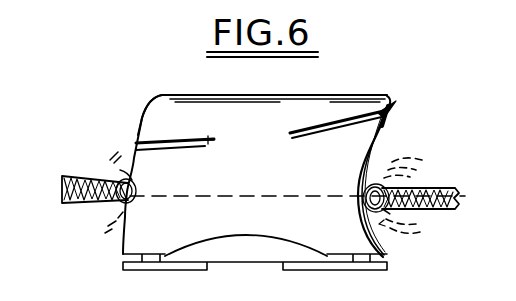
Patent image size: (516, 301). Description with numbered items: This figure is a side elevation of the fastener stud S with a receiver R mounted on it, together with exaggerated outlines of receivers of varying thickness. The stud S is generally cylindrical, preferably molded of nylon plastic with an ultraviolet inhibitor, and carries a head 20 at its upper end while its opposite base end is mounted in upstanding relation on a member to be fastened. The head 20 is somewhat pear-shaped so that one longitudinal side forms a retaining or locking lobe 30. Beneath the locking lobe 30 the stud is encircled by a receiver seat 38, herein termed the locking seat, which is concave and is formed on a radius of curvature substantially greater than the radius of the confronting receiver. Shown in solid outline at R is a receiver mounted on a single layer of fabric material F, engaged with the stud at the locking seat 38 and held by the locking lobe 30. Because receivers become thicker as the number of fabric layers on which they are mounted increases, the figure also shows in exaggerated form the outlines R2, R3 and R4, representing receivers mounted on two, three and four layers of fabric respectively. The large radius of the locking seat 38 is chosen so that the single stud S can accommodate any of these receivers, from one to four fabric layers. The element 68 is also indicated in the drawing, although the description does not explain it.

The head 20 is at (303, 109).
The rounded shoulder 68 is at (147, 108).
The retaining or locking lobe 30 is at (395, 102).
The receiver seat (locking seat) 38 is at (385, 143).
The stud S is at (254, 149).
The receiver R is at (128, 168).
The fabric material F is at (455, 195).
The receiver mounted on two fabric layers R2 is at (415, 177).
The receiver mounted on three fabric layers R3 is at (420, 167).
The receiver mounted on four fabric layers R4 is at (425, 237).